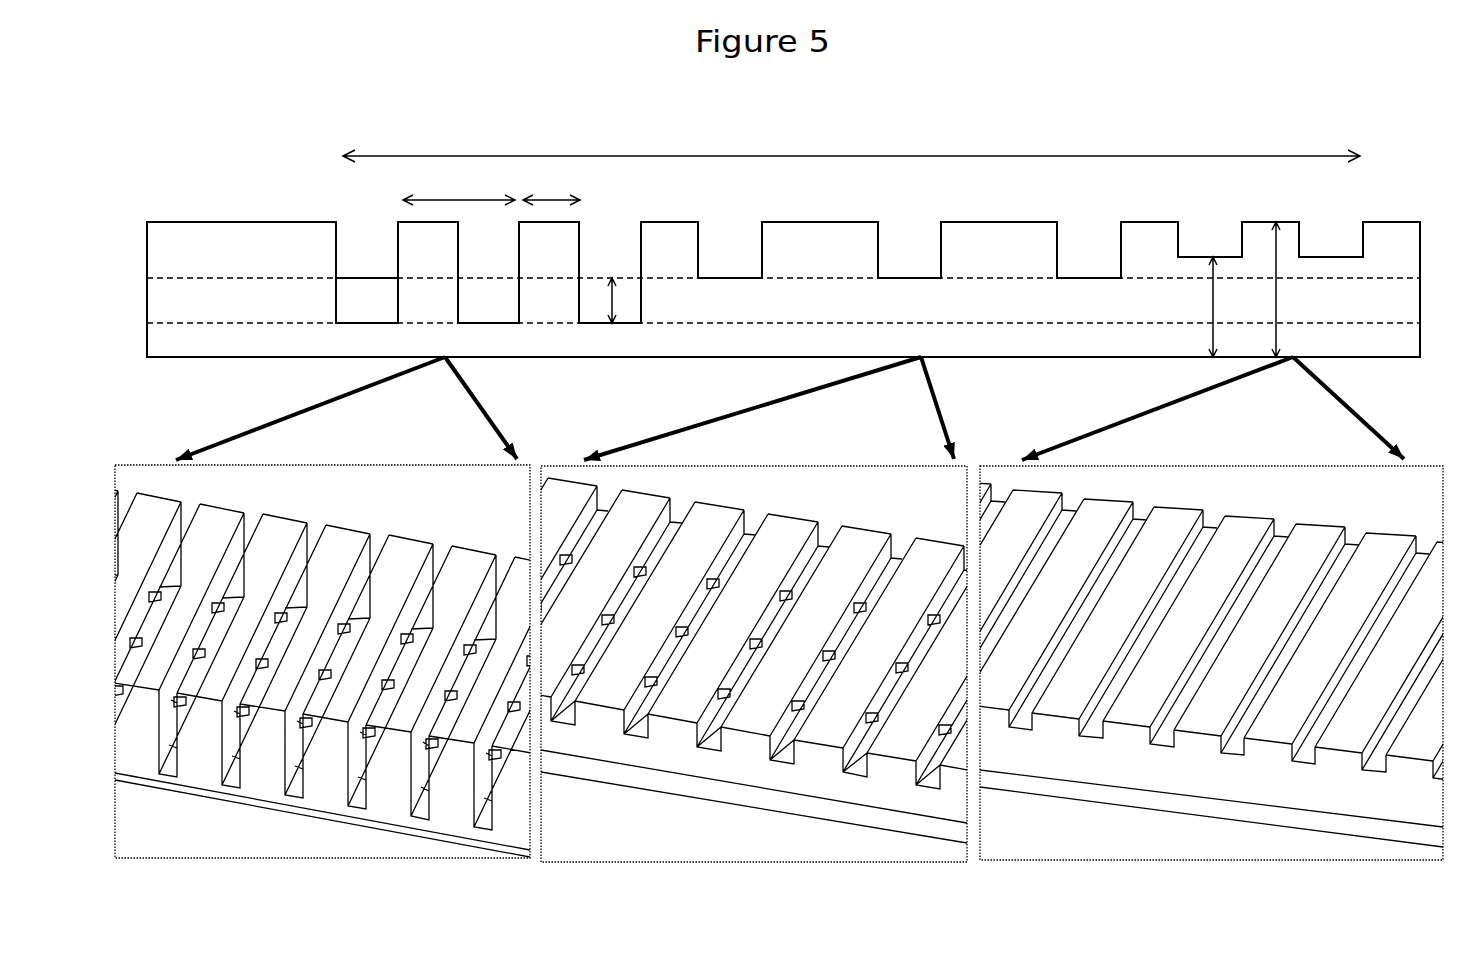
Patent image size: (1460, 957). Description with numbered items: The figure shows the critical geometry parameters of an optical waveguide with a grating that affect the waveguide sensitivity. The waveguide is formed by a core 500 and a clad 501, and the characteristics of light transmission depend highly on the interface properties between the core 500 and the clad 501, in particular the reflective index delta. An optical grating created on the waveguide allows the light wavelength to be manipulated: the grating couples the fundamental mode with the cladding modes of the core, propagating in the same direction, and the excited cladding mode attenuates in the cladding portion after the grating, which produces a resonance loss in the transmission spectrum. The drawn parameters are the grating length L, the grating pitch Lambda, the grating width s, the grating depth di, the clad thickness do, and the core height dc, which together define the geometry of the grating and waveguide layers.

The core 500 is at (364, 299).
The clad 501 is at (821, 337).
The grating length L is at (851, 139).
The grating pitch Lambda is at (472, 222).
The grating width s is at (551, 203).
The core height dc is at (612, 323).
The grating depth di is at (1202, 297).
The clad thickness do is at (1268, 297).